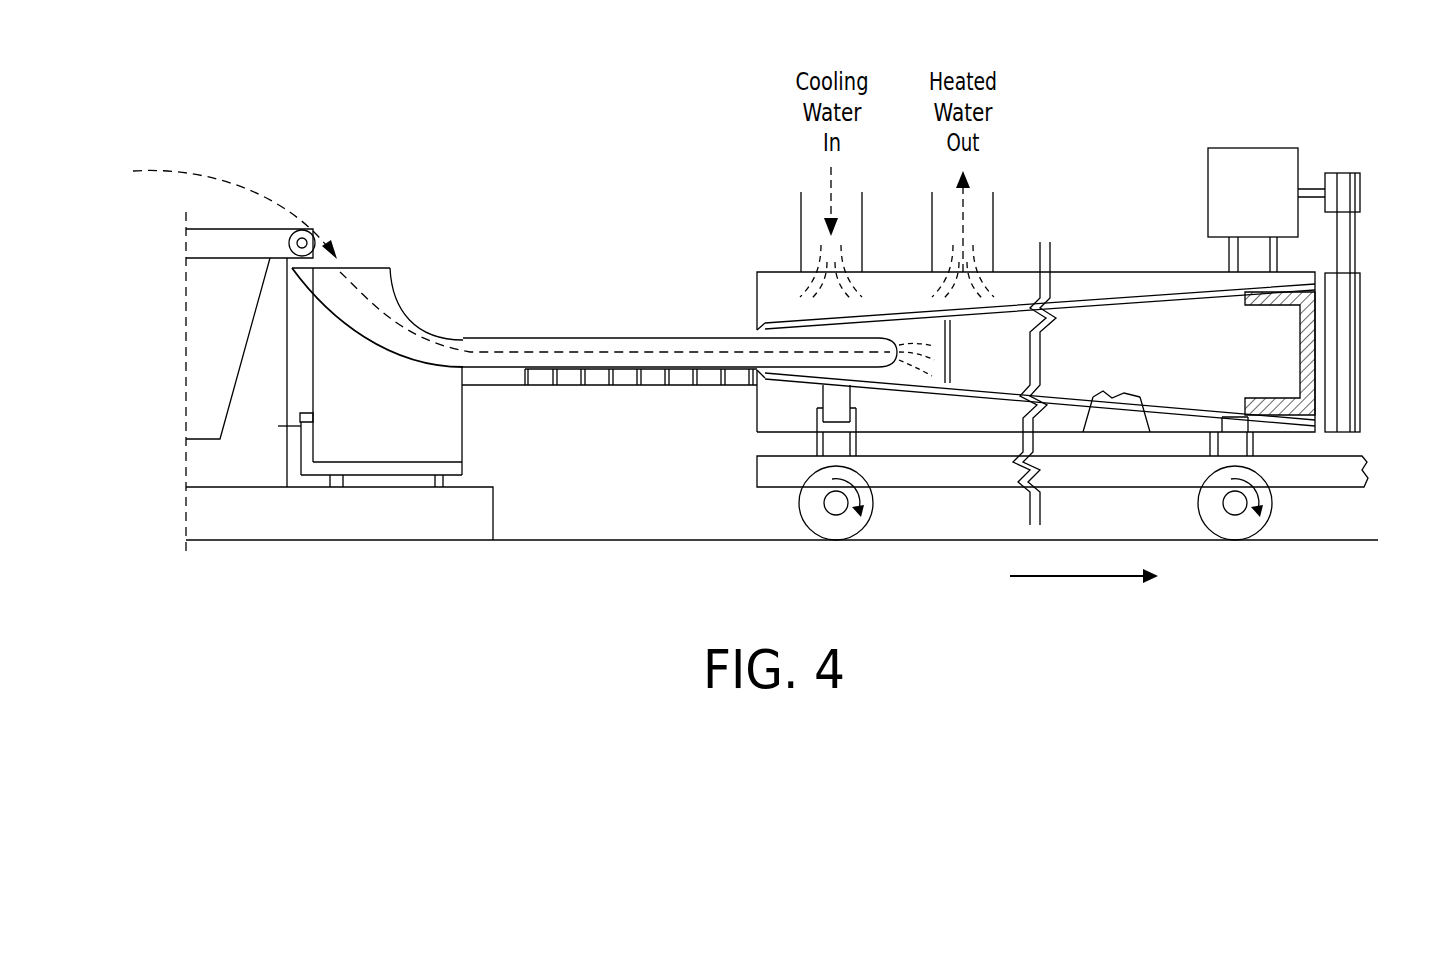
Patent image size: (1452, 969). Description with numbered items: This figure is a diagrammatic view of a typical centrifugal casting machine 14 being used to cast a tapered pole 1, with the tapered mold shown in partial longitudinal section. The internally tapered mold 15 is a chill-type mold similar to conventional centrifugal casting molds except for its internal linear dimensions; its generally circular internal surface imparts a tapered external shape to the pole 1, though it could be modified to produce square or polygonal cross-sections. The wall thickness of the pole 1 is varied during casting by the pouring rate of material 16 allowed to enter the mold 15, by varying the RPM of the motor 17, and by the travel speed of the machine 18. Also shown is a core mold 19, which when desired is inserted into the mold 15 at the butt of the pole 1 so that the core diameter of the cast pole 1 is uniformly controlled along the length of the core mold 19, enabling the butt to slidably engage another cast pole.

The pole 1 is at (1138, 318).
The centrifugal casting machine 14 is at (742, 272).
The internally tapered mold 15 is at (1082, 288).
The material 16 is at (916, 347).
The motor 17 is at (1250, 148).
The travel speed of the machine 18 is at (1008, 603).
The core mold 19 is at (1312, 342).